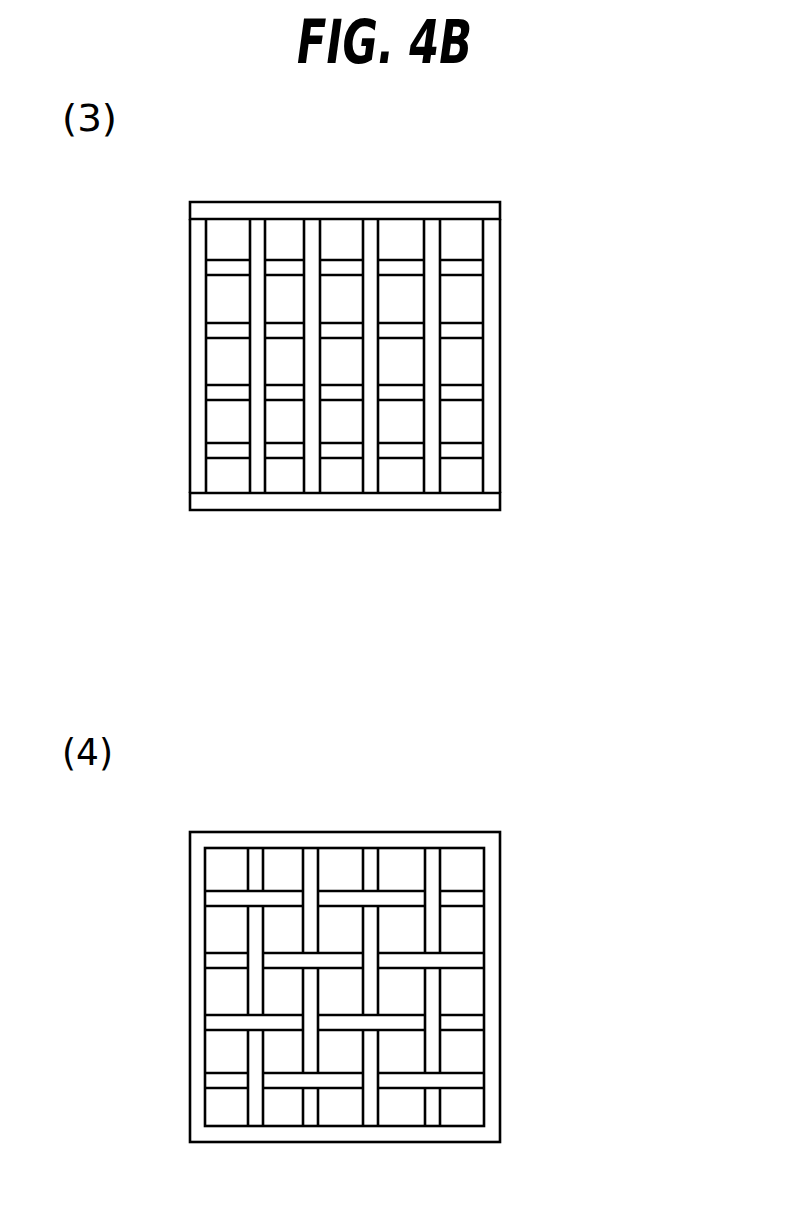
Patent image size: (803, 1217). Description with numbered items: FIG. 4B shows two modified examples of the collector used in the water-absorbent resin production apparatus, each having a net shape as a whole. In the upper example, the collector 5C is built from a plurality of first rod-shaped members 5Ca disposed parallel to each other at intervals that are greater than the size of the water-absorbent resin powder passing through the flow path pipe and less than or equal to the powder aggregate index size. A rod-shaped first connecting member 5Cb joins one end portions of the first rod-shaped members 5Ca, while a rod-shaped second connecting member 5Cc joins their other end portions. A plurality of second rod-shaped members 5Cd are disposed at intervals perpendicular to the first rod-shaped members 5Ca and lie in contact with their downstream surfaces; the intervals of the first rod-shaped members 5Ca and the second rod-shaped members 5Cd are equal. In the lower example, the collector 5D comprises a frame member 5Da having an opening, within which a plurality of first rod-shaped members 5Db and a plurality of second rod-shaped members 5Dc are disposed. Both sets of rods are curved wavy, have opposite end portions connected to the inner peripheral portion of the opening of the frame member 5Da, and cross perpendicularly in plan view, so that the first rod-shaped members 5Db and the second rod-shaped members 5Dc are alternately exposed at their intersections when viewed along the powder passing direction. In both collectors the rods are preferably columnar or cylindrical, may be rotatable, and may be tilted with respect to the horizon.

The collector 5C is at (334, 352).
The first rod-shaped members 5Ca is at (198, 312).
The first connecting member 5Cb is at (288, 208).
The second connecting member 5Cc is at (278, 500).
The second rod-shaped members 5Cd is at (465, 395).
The collector 5D is at (353, 984).
The frame member 5Da is at (289, 840).
The first rod-shaped members 5Db is at (253, 987).
The second rod-shaped members 5Dc is at (465, 1023).